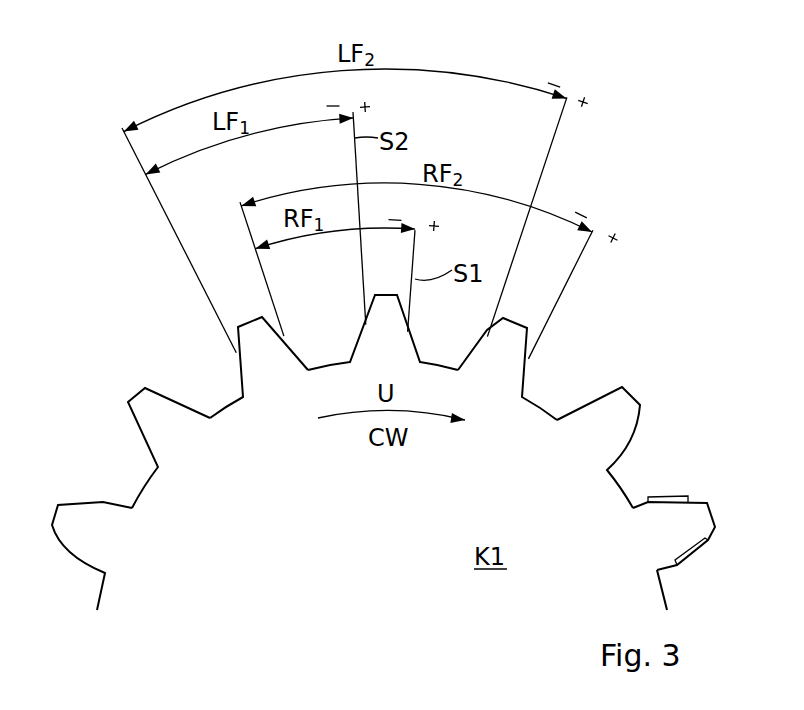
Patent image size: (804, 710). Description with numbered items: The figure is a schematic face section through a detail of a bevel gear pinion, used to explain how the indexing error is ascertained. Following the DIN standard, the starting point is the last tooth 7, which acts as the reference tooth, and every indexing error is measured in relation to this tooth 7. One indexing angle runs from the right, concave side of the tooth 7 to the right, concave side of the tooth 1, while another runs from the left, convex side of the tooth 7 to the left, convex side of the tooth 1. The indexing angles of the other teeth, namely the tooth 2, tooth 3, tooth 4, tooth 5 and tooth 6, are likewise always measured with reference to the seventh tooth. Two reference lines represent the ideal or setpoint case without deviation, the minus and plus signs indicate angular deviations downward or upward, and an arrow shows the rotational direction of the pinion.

The tooth 1 is at (383, 332).
The tooth 2 is at (496, 369).
The tooth 3 is at (590, 443).
The tooth 4 is at (670, 518).
The tooth 5 is at (374, 556).
The tooth 6 is at (162, 448).
The tooth 7 is at (256, 367).